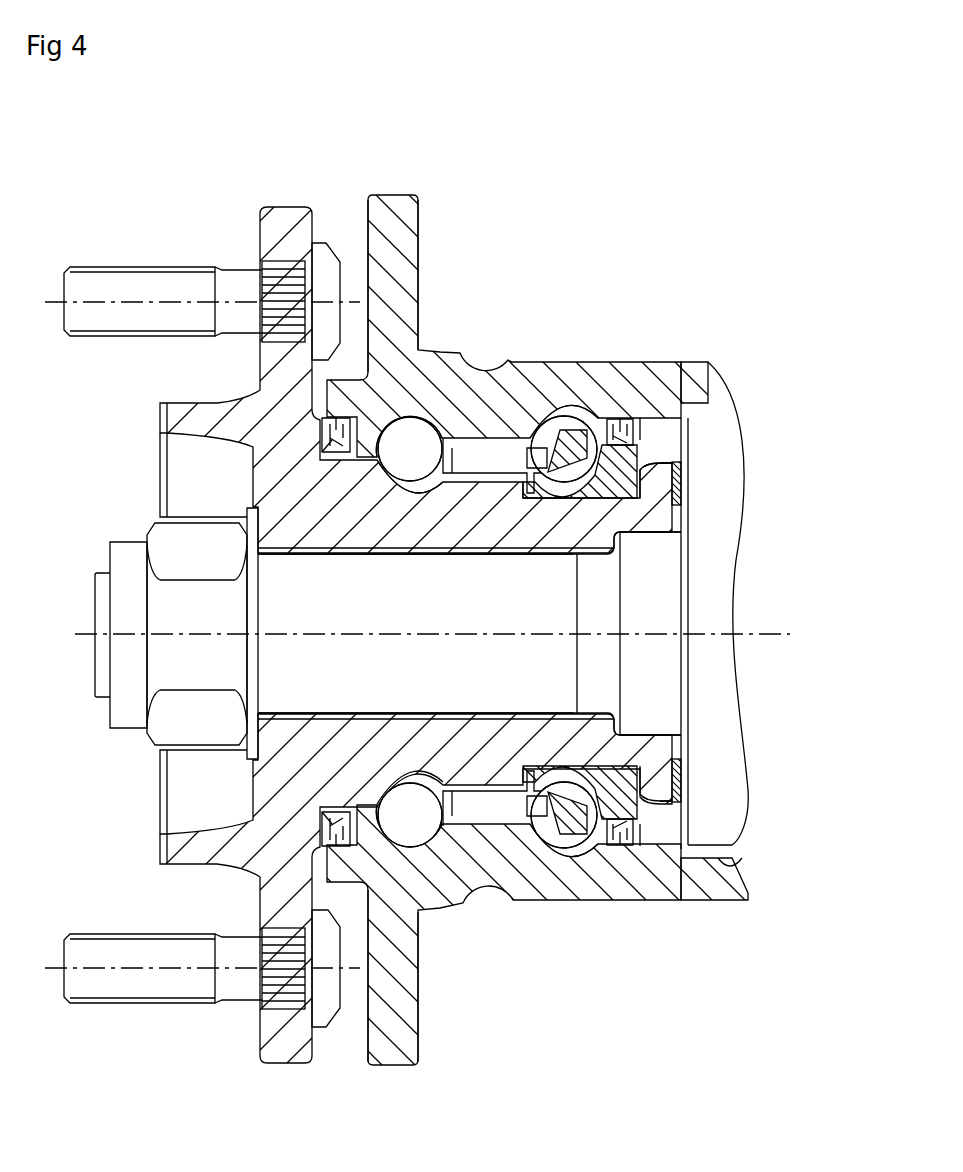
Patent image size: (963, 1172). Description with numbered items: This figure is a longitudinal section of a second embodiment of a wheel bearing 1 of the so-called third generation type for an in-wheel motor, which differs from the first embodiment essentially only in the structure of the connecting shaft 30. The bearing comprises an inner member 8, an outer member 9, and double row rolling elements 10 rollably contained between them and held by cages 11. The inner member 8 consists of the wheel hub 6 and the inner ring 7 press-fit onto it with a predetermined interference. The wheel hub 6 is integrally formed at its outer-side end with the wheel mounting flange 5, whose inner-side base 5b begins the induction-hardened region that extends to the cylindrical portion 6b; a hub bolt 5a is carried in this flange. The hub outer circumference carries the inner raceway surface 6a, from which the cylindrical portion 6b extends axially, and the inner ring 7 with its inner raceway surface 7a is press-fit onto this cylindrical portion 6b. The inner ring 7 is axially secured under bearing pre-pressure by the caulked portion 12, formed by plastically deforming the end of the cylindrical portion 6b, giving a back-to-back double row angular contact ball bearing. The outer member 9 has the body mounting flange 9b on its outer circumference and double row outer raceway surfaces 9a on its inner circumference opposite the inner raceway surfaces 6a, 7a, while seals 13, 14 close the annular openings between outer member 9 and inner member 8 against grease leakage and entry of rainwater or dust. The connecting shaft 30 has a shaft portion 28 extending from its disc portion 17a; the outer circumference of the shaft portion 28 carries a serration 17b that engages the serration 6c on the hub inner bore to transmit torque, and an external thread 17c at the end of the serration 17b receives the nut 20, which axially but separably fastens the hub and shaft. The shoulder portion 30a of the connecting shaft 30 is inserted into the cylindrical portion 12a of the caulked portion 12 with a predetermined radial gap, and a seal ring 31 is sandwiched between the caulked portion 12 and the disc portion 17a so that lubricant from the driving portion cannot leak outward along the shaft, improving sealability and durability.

The wheel bearing 1 is at (231, 229).
The wheel mounting flange 5 is at (286, 225).
The threaded shaft of hub bolt 5a is at (108, 285).
The inner-side base of the wheel mounting flange 5b is at (336, 418).
The wheel hub 6 is at (258, 462).
The inner raceway surface 6a is at (402, 480).
The cylindrical portion 6b is at (611, 492).
The serration 6c is at (345, 556).
The inner ring 7 is at (622, 457).
The inner raceway surface 7a is at (553, 483).
The inner member 8 is at (237, 496).
The outer member 9 is at (641, 375).
The outer raceway surfaces 9a is at (432, 442).
The body mounting flange 9b is at (388, 222).
The rolling elements 10 is at (505, 845).
The cages 11 is at (512, 792).
The caulked portion 12 is at (668, 483).
The cylindrical portion of the caulked portion 12a is at (628, 733).
The seal 13 is at (325, 835).
The seal 14 is at (620, 852).
The disc portion 17a is at (702, 651).
The serration 17b is at (320, 737).
The external thread 17c is at (103, 700).
The nut 20 is at (182, 614).
The shaft portion 28 is at (420, 676).
The connecting shaft 30 is at (722, 592).
The shoulder portion 30a is at (672, 748).
The seal ring 31 is at (678, 472).